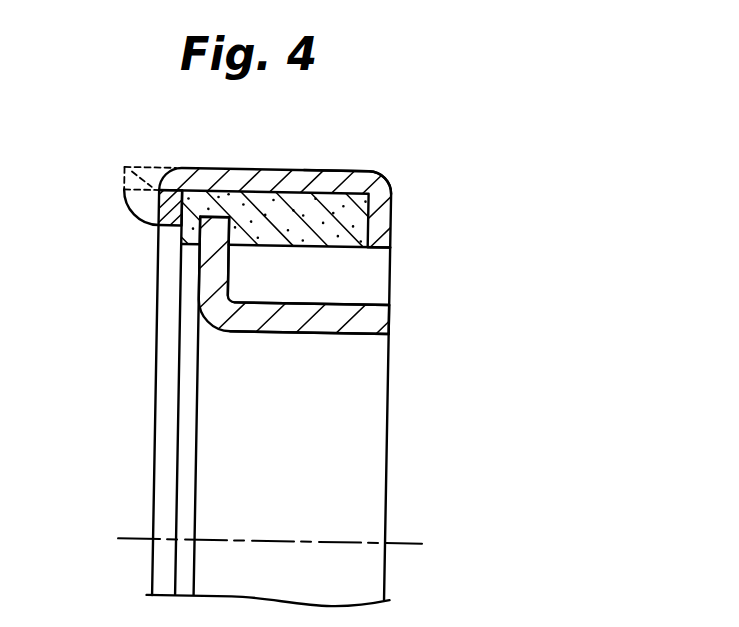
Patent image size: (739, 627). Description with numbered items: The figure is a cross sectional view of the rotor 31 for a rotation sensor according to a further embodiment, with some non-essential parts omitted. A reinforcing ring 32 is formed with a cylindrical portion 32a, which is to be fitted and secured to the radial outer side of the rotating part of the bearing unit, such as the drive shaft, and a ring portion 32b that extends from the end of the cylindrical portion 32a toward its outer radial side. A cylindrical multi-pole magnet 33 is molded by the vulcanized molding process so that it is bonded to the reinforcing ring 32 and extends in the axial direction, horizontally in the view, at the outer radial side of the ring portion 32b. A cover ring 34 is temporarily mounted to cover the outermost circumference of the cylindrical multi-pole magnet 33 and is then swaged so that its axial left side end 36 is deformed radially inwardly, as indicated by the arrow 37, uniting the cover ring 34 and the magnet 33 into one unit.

The rotor 31 is at (345, 162).
The reinforcing ring 32 is at (426, 278).
The cylindrical portion 32a is at (368, 318).
The ring portion 32b is at (215, 274).
The cylindrical multi-pole magnet 33 is at (367, 226).
The cover ring 34 is at (384, 181).
The axial left side end 36 is at (123, 170).
The arrow 37 is at (147, 228).